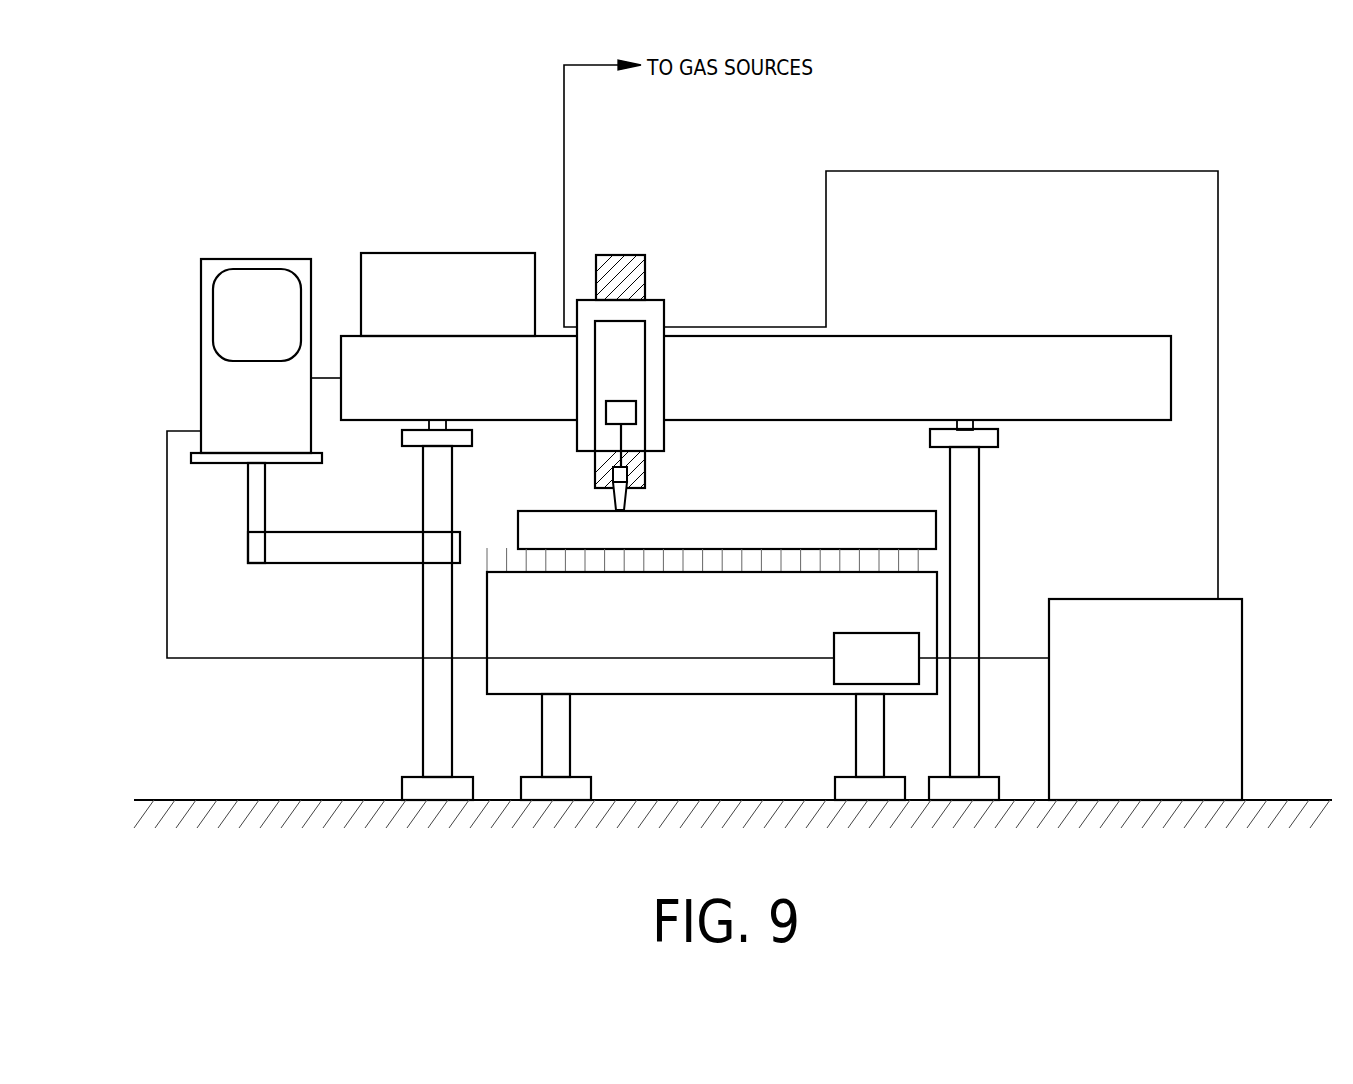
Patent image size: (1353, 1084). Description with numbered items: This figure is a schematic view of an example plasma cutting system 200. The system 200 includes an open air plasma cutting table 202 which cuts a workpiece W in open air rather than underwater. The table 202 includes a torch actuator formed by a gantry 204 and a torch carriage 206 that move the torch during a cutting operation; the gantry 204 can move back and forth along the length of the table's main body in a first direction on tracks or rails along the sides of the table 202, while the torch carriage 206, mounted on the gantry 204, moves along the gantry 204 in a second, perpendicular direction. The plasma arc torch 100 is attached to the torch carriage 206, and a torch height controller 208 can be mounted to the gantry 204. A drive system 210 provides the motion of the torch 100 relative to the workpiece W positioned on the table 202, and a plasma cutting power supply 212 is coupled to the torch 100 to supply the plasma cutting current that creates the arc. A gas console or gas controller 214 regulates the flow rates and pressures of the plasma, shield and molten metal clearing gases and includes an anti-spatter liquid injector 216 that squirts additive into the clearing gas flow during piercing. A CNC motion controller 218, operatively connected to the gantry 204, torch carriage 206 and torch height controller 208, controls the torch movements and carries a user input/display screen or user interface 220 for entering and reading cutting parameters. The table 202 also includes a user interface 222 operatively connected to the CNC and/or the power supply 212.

The plasma arc torch 100 is at (627, 500).
The plasma cutting system 200 is at (205, 731).
The open air plasma cutting table 202 is at (678, 694).
The gantry 204 is at (1055, 336).
The torch carriage 206 is at (660, 300).
The torch height controller 208 is at (628, 255).
The drive system 210 is at (407, 253).
The plasma cutting power supply 212 is at (1242, 650).
The gas console 214 is at (645, 370).
The anti-spatter liquid injector 216 is at (606, 412).
The CNC motion controller 218 is at (201, 403).
The user interface 220 is at (213, 316).
The user interface 222 is at (834, 643).
The workpiece W is at (847, 511).